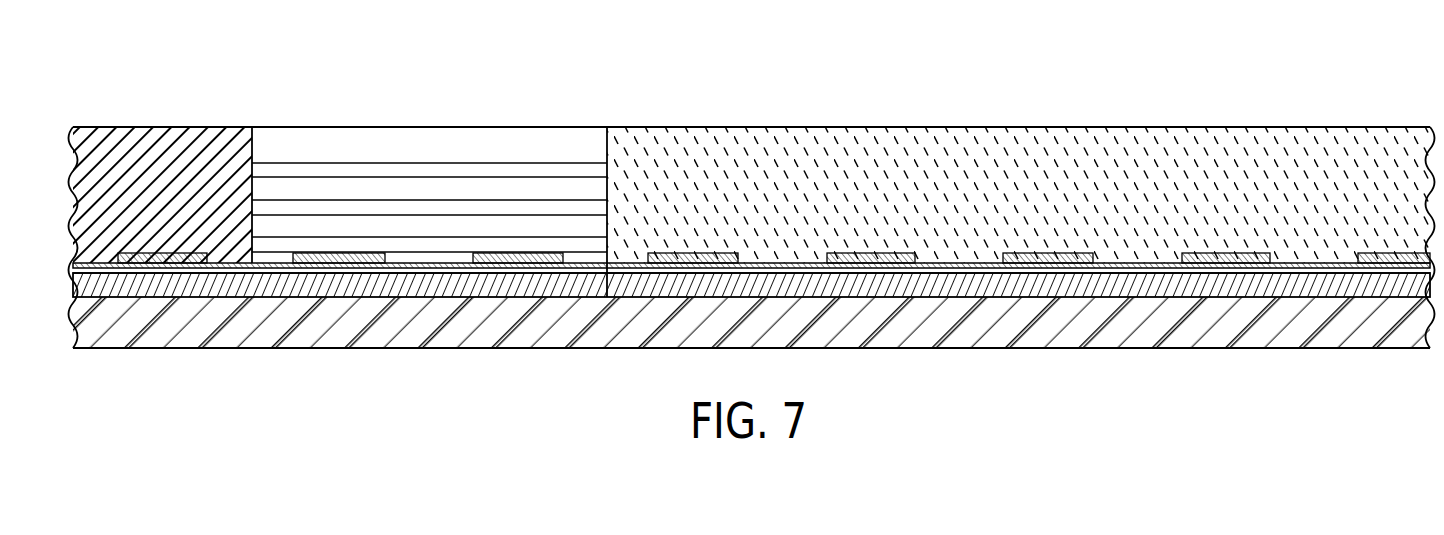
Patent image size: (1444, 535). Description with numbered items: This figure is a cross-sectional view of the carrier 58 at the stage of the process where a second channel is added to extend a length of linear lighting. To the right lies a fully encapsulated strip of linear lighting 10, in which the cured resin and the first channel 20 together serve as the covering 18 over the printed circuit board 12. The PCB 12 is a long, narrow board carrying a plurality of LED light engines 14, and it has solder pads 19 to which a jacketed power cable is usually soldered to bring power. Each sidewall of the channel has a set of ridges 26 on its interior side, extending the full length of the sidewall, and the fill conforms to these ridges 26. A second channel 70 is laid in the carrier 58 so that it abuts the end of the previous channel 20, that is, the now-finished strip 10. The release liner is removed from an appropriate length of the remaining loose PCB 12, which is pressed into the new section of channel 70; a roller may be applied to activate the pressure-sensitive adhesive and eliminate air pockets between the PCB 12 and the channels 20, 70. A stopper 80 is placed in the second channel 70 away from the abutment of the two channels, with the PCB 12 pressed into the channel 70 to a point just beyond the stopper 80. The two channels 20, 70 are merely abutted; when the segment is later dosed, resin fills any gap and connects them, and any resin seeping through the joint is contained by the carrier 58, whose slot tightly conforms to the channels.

The strip of encapsulated linear lighting 10 is at (967, 118).
The printed circuit board 12 is at (444, 267).
The LED light engines 14 is at (518, 253).
The covering 18 is at (1092, 176).
The solder pads 19 is at (583, 257).
The channel 20 is at (282, 282).
The ridges 26 is at (336, 190).
The carrier 58 is at (180, 340).
The second channel 70 is at (410, 140).
The stopper 80 is at (113, 160).